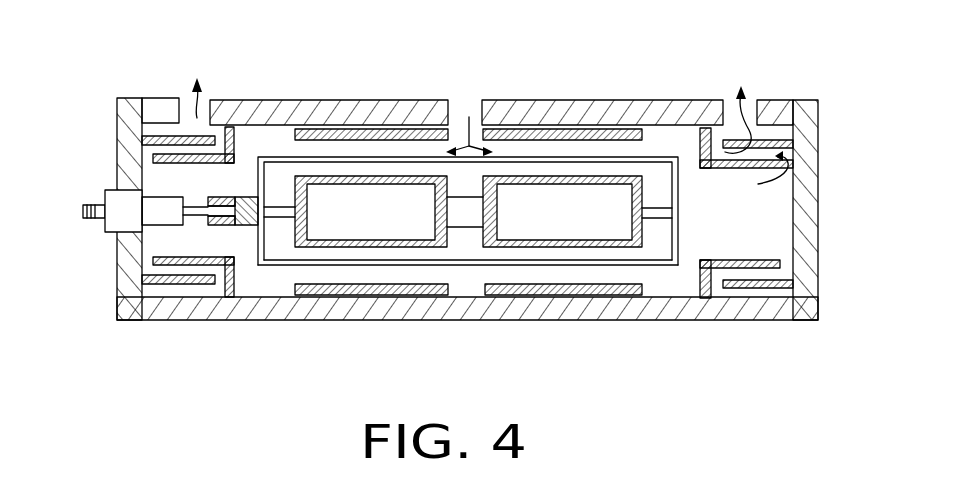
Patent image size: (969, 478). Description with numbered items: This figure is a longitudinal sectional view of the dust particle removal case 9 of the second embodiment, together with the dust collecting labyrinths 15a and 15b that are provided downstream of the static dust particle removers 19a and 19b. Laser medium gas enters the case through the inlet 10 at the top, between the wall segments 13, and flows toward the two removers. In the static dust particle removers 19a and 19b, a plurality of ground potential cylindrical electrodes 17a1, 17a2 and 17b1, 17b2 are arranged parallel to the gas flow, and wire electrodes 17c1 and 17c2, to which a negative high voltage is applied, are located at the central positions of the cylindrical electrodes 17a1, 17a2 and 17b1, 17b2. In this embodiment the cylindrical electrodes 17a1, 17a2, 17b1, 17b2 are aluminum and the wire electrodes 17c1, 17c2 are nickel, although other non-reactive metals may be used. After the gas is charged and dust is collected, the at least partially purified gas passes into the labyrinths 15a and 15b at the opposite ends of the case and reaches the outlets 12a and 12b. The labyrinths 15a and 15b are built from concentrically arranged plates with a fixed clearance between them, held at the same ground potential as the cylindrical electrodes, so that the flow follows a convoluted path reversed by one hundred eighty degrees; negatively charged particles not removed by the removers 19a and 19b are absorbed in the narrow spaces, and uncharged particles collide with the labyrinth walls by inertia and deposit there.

The dust particle removal case 9 is at (170, 320).
The inlet 10 is at (469, 117).
The outlet 12a is at (183, 110).
The outlet 12b is at (748, 110).
The upper wall segment 13 is at (390, 127).
The dust collecting labyrinth 15a is at (173, 258).
The dust collecting labyrinth 15b is at (750, 258).
The ground potential cylindrical electrode 17a1 is at (340, 130).
The ground potential cylindrical electrode 17a2 is at (382, 295).
The ground potential cylindrical electrode 17b1 is at (612, 133).
The ground potential cylindrical electrode 17b2 is at (590, 295).
The wire electrode 17c1 is at (431, 157).
The wire electrode 17c2 is at (460, 266).
The static dust particle remover 19a is at (393, 228).
The static dust particle remover 19b is at (591, 228).